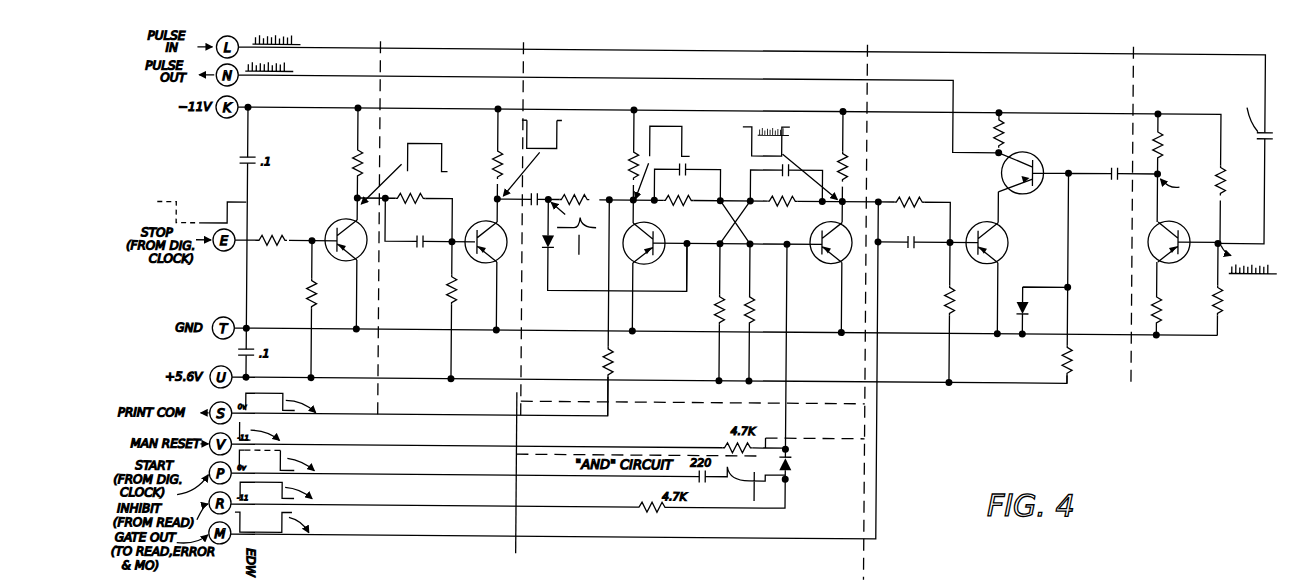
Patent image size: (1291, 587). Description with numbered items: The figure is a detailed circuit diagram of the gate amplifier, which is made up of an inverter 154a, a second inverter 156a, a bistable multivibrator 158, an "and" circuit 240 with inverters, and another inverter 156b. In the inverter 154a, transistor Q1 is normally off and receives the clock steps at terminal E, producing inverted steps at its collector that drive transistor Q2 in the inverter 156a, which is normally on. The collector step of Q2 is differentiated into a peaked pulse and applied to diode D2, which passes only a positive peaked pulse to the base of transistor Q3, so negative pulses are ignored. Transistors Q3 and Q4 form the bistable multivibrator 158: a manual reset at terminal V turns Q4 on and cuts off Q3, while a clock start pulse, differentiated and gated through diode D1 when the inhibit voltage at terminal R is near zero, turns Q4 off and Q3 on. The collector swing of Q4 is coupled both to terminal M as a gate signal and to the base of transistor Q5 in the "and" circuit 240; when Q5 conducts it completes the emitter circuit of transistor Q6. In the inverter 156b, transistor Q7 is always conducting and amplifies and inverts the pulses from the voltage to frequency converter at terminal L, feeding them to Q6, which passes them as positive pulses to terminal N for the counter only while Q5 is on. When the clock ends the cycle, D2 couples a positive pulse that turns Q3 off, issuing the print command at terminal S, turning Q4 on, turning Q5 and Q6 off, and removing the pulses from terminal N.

The inverter 154a is at (352, 203).
The inverter 156a is at (459, 204).
The bistable multivibrator 158 is at (687, 238).
The "and" circuit 240 is at (1015, 209).
The inverter 156b is at (1017, 184).
The transistor Q1 is at (346, 248).
The transistor Q2 is at (486, 249).
The transistor Q3 is at (647, 250).
The transistor Q4 is at (823, 250).
The transistor Q5 is at (991, 247).
The transistor Q6 is at (1025, 173).
The transistor Q7 is at (1169, 246).
The diode D1 is at (793, 464).
The diode D2 is at (615, 245).